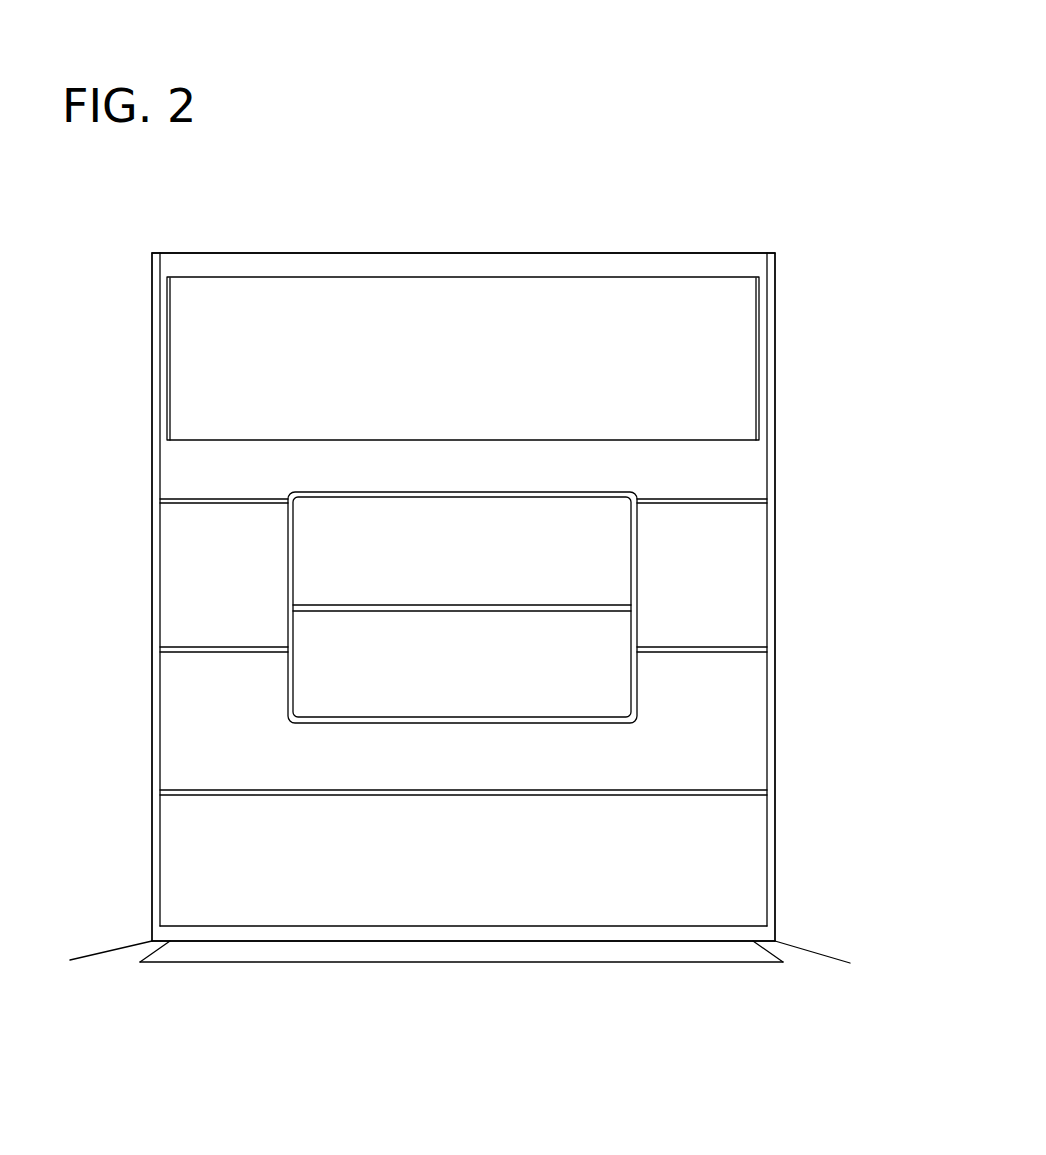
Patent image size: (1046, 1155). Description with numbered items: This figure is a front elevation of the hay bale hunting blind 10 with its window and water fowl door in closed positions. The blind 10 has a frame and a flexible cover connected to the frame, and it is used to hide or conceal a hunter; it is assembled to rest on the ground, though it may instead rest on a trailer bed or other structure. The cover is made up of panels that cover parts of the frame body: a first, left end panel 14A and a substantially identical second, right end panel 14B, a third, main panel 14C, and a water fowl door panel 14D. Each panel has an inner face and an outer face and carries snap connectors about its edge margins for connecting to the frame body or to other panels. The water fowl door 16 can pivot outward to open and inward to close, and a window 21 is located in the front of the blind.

The hay bale hunting blind 10 is at (769, 182).
The first end panel 14A is at (152, 484).
The second end panel 14B is at (776, 448).
The third panel 14C is at (731, 565).
The water fowl door panel 14D is at (716, 338).
The water fowl door 16 is at (172, 328).
The window 21 is at (292, 621).